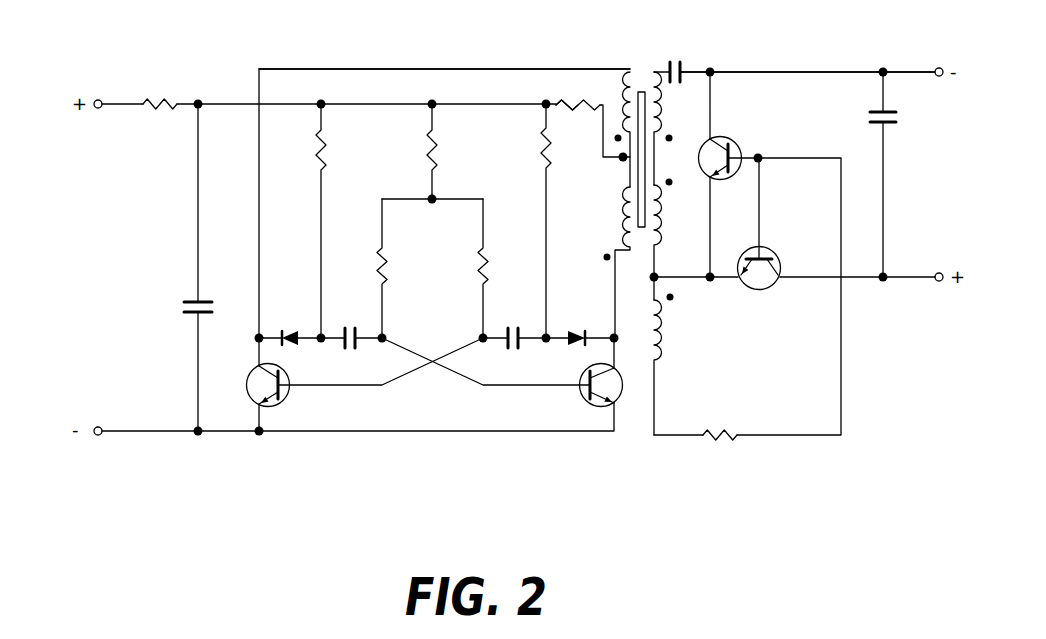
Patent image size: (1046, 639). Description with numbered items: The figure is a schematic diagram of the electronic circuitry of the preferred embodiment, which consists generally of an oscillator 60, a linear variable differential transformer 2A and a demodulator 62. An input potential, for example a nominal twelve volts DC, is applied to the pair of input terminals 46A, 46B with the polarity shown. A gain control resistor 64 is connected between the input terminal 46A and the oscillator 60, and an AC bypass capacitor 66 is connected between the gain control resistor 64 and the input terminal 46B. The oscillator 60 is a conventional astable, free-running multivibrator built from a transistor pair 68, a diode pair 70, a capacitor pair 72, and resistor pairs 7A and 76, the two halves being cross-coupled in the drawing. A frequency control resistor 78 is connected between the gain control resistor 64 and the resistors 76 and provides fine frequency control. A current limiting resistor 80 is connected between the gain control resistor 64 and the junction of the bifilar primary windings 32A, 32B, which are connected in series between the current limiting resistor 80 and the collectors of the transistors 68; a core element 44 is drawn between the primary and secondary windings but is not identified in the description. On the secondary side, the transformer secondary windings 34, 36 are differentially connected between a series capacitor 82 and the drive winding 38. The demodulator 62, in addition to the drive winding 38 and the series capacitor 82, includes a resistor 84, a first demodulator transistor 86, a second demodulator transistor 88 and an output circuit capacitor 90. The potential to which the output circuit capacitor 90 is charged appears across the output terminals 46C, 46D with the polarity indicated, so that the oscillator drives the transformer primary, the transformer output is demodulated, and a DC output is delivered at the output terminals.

The linear variable differential transformer 2A is at (658, 226).
The bifilar primary winding 32A is at (619, 88).
The bifilar primary winding 32B is at (624, 204).
The secondary winding 34 is at (657, 102).
The secondary winding 36 is at (657, 224).
The drive winding 38 is at (656, 335).
The transformer core 44 is at (641, 91).
The input terminal 46A is at (102, 119).
The input terminal 46B is at (104, 415).
The output terminal 46C is at (924, 292).
The output terminal 46D is at (931, 86).
The oscillator 60 is at (313, 65).
The demodulator 62 is at (799, 71).
The gain control resistor 64 is at (153, 101).
The AC bypass capacitor 66 is at (184, 307).
The transistor pair 68 is at (275, 410).
The diode pair 70 is at (289, 328).
The capacitor pair 72 is at (346, 328).
The resistor pair 76 is at (378, 250).
The frequency control resistor 78 is at (428, 145).
The resistor pair 7A is at (318, 150).
The current limiting resistor 80 is at (556, 104).
The series capacitor 82 is at (684, 68).
The resistor 84 is at (719, 440).
The first demodulator transistor 86 is at (780, 285).
The second demodulator transistor 88 is at (735, 142).
The output circuit capacitor 90 is at (896, 119).